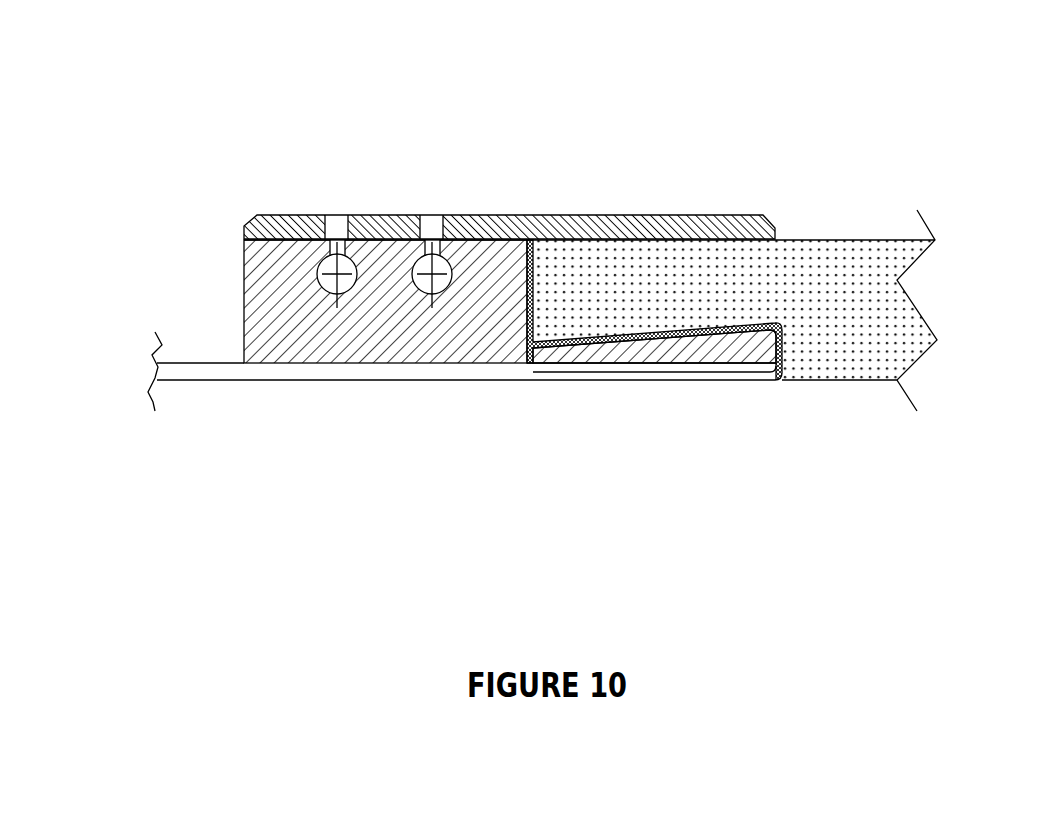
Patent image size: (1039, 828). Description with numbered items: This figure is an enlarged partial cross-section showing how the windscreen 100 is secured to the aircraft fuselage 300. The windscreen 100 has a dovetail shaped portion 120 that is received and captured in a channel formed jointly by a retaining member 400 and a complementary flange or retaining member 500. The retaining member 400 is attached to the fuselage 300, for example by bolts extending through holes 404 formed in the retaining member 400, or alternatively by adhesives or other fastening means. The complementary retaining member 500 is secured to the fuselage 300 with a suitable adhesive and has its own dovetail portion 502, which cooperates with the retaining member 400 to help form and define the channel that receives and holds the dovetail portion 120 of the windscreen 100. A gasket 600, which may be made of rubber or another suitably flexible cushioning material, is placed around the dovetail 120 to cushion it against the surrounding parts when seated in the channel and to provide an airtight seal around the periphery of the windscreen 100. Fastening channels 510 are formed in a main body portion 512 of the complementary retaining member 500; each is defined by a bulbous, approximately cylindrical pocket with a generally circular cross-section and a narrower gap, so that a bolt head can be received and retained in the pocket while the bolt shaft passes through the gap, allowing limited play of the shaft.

The windscreen 100 is at (867, 240).
The dovetail shaped portion 120 is at (680, 288).
The fuselage 300 is at (425, 380).
The retaining member 400 is at (510, 215).
The holes 404 is at (432, 215).
The complementary retaining member 500 is at (242, 313).
The dovetail portion 502 is at (685, 343).
The fastening channels 510 is at (425, 278).
The main body portion 512 is at (352, 335).
The gasket 600 is at (533, 348).